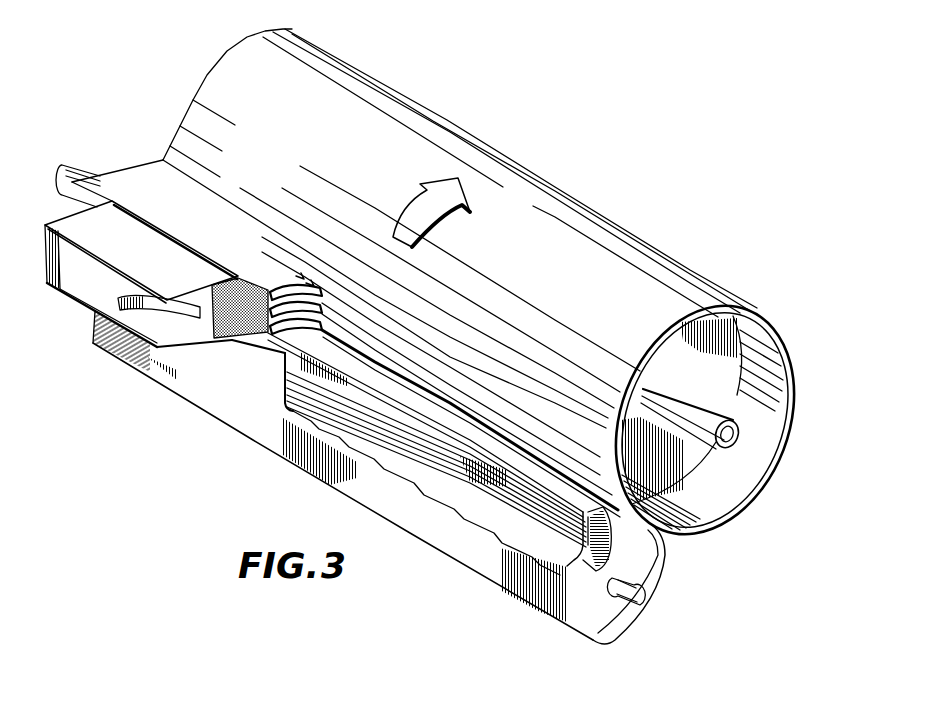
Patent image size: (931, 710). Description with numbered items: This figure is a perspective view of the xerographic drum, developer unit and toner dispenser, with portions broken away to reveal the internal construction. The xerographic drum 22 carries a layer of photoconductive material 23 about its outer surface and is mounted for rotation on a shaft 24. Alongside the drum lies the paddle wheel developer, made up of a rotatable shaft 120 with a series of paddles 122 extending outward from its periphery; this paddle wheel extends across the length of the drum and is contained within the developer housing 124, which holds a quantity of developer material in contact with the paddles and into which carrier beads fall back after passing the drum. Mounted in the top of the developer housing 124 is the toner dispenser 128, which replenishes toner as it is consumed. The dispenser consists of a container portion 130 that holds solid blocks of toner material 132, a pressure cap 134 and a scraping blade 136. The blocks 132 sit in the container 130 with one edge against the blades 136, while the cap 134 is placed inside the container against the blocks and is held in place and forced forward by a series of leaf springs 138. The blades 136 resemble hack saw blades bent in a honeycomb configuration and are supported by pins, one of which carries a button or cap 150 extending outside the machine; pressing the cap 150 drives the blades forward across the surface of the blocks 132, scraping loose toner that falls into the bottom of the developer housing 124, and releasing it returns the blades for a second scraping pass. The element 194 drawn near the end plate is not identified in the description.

The xerographic drum 22 is at (577, 208).
The layer of photoconductive material 23 is at (731, 310).
The shaft 24 is at (737, 420).
The rotatable shaft 120 is at (538, 527).
The paddles 122 is at (538, 478).
The developer housing 124 is at (652, 560).
The toner dispenser 128 is at (281, 180).
The container portion 130 is at (203, 266).
The solid blocks of toner material 132 is at (227, 335).
The pressure cap 134 is at (170, 333).
The scraping blade 136 is at (318, 304).
The leaf springs 138 is at (117, 301).
The button or cap 150 is at (72, 170).
The bolt 194 is at (648, 602).